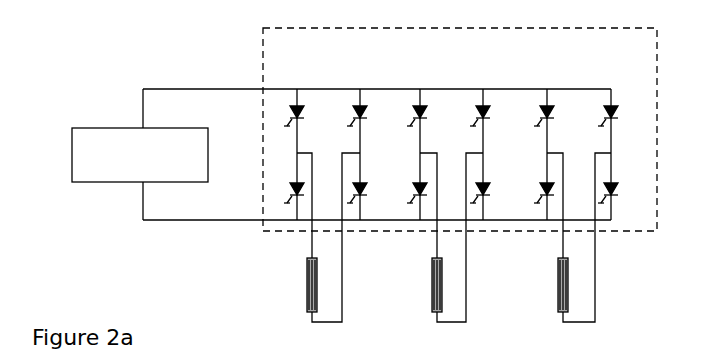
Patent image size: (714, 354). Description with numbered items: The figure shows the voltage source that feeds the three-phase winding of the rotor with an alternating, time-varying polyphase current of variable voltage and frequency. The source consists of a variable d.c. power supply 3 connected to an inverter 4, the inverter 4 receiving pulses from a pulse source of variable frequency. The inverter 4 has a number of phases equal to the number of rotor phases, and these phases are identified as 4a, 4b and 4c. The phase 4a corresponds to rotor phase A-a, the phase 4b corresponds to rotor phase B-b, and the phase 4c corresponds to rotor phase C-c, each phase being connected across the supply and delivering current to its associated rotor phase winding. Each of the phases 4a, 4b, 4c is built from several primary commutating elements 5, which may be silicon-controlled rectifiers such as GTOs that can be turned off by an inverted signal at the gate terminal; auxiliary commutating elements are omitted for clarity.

The variable d.c. power supply 3 is at (80, 182).
The inverter 4 is at (252, 48).
The phase of the inverter 4a is at (360, 82).
The phase of the inverter 4b is at (485, 82).
The phase of the inverter 4c is at (613, 82).
The primary commutating element 5 is at (451, 190).